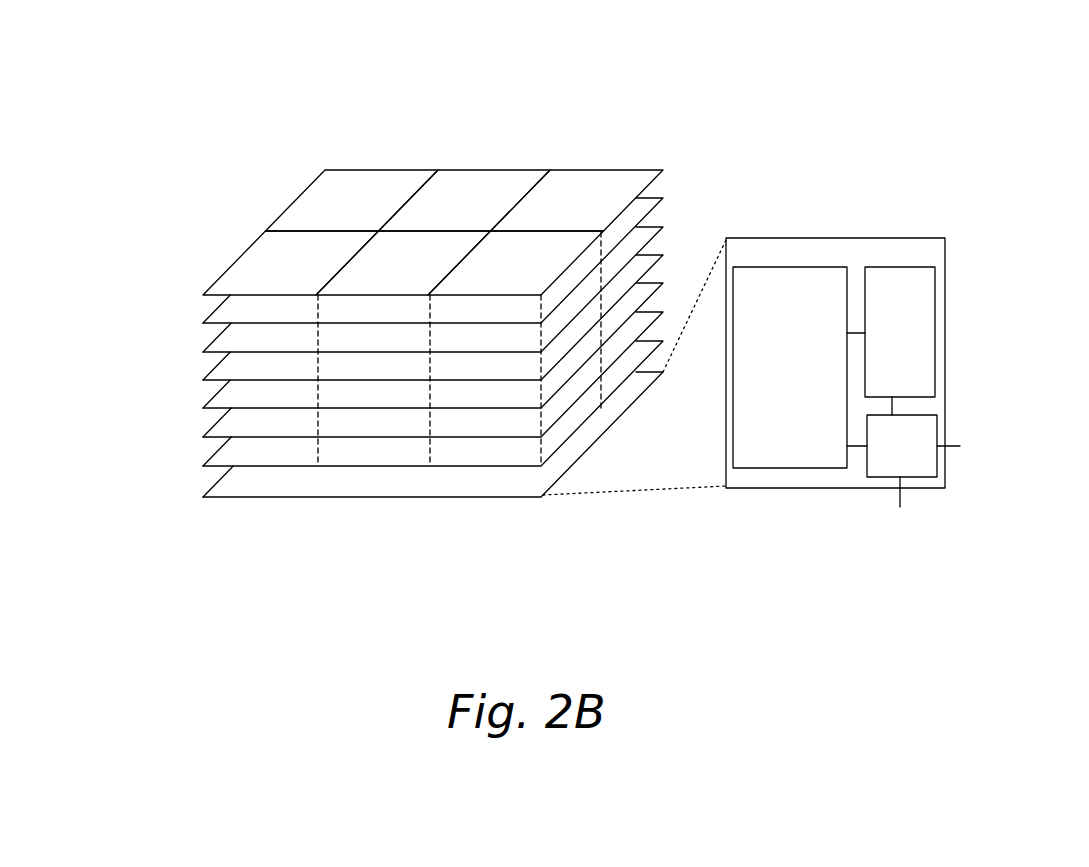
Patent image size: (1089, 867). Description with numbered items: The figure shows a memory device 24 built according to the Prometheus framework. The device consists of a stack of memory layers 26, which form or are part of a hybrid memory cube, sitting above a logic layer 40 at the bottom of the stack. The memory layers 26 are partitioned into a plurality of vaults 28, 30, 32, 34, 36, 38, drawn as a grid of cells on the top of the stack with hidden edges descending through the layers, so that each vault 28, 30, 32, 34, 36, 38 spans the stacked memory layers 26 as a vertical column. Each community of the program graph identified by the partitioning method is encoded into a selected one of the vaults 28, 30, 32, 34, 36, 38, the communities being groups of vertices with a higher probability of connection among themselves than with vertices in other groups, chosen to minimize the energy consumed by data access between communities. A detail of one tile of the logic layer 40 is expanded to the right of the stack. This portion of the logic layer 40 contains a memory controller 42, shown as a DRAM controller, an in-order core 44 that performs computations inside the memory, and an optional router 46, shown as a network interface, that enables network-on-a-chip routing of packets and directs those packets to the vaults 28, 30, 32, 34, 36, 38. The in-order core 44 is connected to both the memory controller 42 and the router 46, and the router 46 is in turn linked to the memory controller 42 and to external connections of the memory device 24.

The memory device 24 is at (713, 97).
The memory layers 26 is at (178, 353).
The vault 28 is at (322, 215).
The vault 30 is at (437, 216).
The vault 32 is at (544, 216).
The vault 34 is at (265, 280).
The vault 36 is at (380, 280).
The vault 38 is at (489, 281).
The logic layer 40 is at (422, 487).
The memory controller 42 is at (928, 277).
The in-order core 44 is at (804, 272).
The router 46 is at (927, 463).